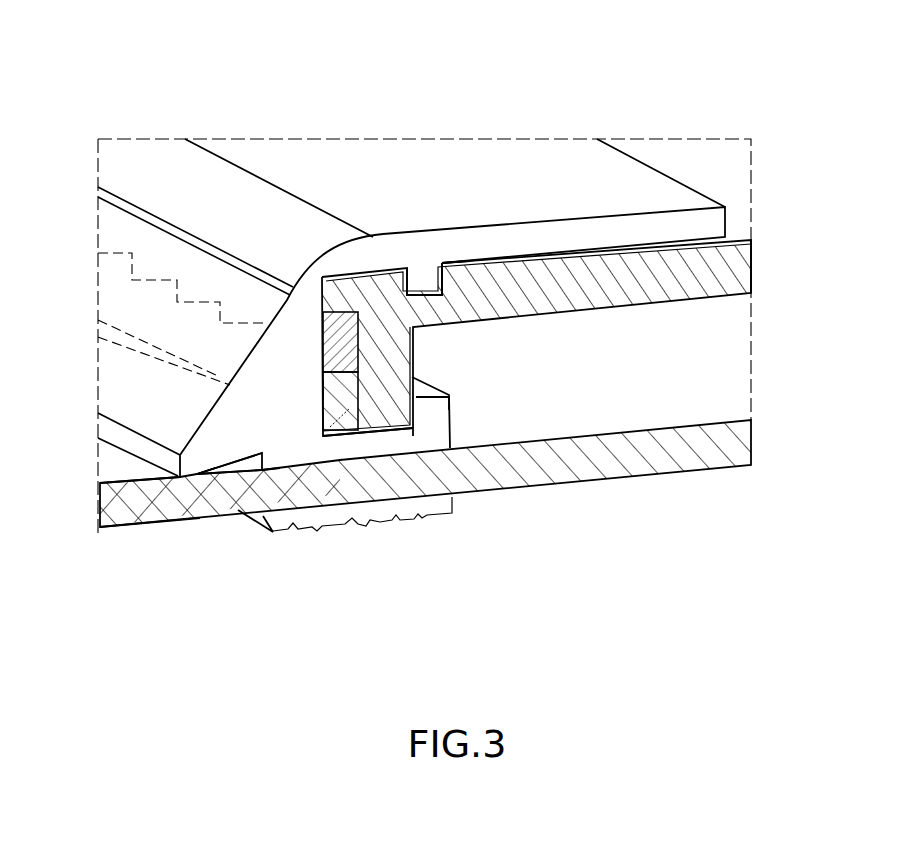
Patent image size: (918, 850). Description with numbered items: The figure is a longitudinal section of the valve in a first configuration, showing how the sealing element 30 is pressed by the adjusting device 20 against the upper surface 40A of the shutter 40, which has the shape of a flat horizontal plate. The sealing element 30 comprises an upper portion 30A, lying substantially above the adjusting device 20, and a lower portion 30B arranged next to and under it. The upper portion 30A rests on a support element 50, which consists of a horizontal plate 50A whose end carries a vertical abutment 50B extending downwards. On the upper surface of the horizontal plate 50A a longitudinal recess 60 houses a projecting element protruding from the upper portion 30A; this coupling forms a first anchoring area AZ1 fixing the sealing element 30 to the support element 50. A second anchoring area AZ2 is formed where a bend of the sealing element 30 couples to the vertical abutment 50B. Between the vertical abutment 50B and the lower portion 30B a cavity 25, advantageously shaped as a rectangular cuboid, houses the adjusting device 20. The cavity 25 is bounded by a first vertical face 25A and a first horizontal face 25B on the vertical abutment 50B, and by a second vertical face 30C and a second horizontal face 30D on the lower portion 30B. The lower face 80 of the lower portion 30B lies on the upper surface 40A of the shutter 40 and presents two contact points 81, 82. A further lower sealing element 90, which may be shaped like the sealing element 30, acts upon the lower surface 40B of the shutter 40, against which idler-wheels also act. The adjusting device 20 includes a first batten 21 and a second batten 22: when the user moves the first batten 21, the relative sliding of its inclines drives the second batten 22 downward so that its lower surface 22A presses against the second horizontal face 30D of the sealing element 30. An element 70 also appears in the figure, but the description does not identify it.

The adjusting device 20 is at (312, 348).
The first batten 21 is at (334, 310).
The second batten 22 is at (323, 372).
The lower surface 22A is at (333, 437).
The cavity 25 is at (368, 350).
The first vertical face 25A is at (378, 366).
The first horizontal face 25B is at (348, 278).
The sealing element 30 is at (287, 212).
The upper portion 30A is at (588, 183).
The lower portion 30B is at (263, 472).
The second vertical face 30C is at (323, 381).
The second horizontal face 30D is at (273, 532).
The shutter 40 is at (116, 461).
The upper surface 40A is at (116, 473).
The lower surface 40B is at (138, 525).
The support element 50 is at (463, 335).
The horizontal plate 50A is at (730, 265).
The vertical abutment 50B is at (395, 432).
The longitudinal recess 60 is at (431, 280).
The wedge member 70 is at (205, 480).
The lower face 80 is at (413, 435).
The contact point 81 is at (240, 470).
The contact point 82 is at (190, 476).
The lower sealing element 90 is at (352, 522).
The first anchoring area AZ1 is at (442, 262).
The second anchoring area AZ2 is at (420, 397).